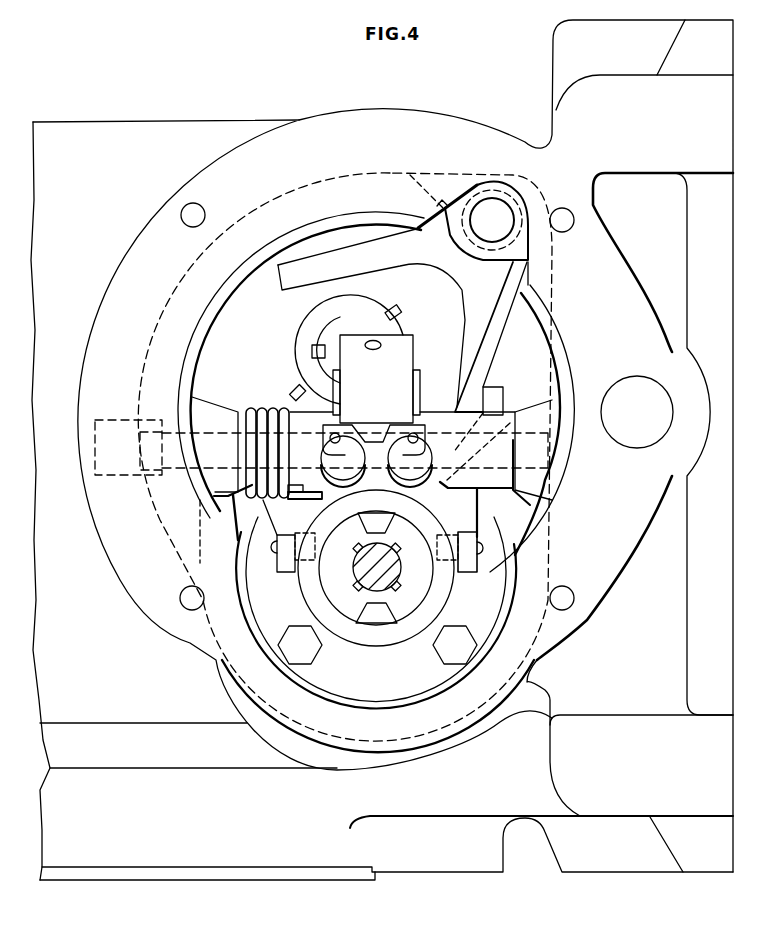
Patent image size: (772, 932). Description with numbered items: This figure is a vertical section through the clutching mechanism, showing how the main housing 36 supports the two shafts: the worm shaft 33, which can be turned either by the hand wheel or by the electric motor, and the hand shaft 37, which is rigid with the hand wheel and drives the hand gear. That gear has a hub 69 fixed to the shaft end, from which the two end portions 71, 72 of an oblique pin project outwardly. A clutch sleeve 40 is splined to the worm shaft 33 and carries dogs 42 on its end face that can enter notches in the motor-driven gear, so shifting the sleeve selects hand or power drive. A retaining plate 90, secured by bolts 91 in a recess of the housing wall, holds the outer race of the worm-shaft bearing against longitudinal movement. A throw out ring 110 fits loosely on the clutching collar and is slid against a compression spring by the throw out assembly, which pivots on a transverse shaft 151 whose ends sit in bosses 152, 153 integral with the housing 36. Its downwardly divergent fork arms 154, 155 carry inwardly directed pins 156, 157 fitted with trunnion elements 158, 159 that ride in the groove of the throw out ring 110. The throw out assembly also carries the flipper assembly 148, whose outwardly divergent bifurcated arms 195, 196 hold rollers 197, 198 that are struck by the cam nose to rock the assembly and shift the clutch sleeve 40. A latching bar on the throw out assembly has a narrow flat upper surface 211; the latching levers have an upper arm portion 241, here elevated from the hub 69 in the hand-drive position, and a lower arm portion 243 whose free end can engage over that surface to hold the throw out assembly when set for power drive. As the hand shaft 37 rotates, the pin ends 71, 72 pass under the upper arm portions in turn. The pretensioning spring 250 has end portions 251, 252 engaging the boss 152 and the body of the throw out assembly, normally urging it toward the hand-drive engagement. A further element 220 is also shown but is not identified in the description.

The worm shaft 33 is at (365, 583).
The main housing 36 is at (165, 622).
The shaft 37 is at (330, 338).
The clutch sleeve 40 is at (420, 575).
The dogs 42 is at (384, 520).
The hub 69 is at (365, 312).
The end portion of pin 71 is at (402, 312).
The end portion of pin 72 is at (292, 387).
The retaining plate 90 is at (382, 705).
The bolts 91 is at (305, 655).
The throw out ring 110 is at (395, 634).
The flipper assembly 148 is at (415, 348).
The transverse shaft 151 is at (550, 460).
The boss 152 is at (220, 400).
The boss 153 is at (540, 397).
The fork arm 154 is at (280, 524).
The fork arm 155 is at (446, 535).
The pin 156 is at (273, 553).
The pin 157 is at (462, 537).
The trunnion element 158 is at (313, 546).
The trunnion element 159 is at (452, 536).
The bifurcated arm 195 is at (417, 437).
The bifurcated arm 196 is at (340, 428).
The roller 197 is at (418, 455).
The roller 198 is at (352, 470).
The flat upper surface 211 is at (493, 392).
The pivot pin 220 is at (507, 210).
The upper arm portion 241 is at (328, 262).
The lower arm portion 243 is at (480, 362).
The pretensioning spring 250 is at (263, 410).
The end portion of spring 251 is at (238, 492).
The end portion of spring 252 is at (313, 487).